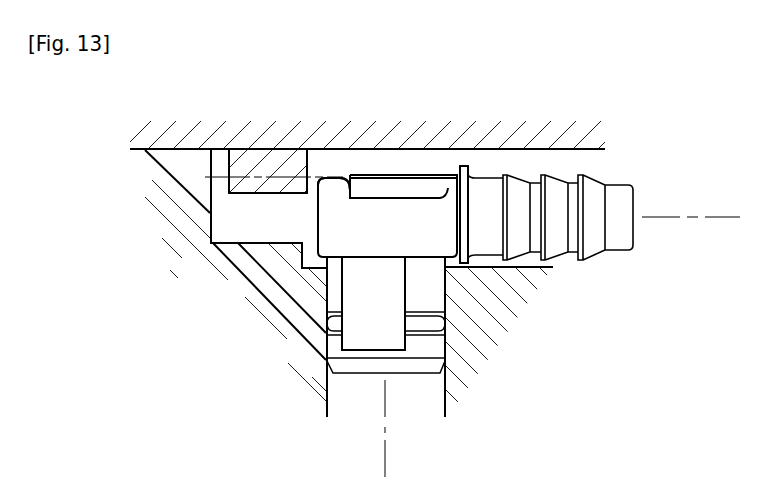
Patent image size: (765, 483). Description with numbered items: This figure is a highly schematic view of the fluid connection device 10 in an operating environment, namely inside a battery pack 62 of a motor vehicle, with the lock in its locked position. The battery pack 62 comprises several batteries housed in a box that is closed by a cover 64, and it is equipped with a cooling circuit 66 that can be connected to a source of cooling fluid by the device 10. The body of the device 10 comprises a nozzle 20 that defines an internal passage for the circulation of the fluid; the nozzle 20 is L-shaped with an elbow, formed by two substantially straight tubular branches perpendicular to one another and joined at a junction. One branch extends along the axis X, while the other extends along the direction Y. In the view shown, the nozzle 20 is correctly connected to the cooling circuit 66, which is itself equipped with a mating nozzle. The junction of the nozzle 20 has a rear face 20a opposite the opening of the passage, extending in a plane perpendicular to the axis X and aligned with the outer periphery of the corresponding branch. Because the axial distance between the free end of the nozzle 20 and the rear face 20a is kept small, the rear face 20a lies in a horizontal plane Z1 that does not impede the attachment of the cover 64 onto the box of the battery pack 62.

The fluid connection device 10 is at (607, 271).
The nozzle 20 is at (327, 358).
The rear face 20a is at (278, 193).
The battery pack 62 is at (541, 115).
The cover 64 is at (467, 132).
The cooling circuit 66 is at (300, 327).
The horizontal plane Z1 is at (258, 177).
The axis X is at (386, 468).
The axis Y is at (722, 217).